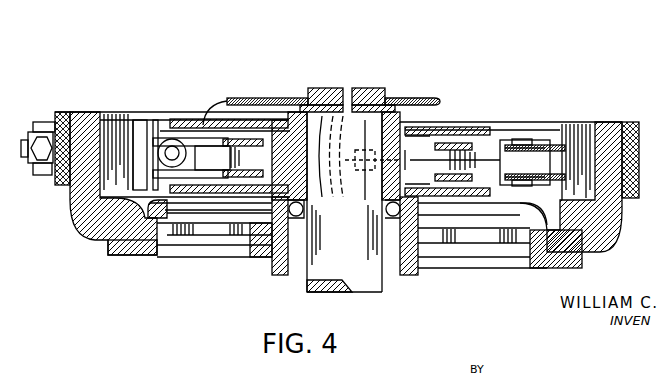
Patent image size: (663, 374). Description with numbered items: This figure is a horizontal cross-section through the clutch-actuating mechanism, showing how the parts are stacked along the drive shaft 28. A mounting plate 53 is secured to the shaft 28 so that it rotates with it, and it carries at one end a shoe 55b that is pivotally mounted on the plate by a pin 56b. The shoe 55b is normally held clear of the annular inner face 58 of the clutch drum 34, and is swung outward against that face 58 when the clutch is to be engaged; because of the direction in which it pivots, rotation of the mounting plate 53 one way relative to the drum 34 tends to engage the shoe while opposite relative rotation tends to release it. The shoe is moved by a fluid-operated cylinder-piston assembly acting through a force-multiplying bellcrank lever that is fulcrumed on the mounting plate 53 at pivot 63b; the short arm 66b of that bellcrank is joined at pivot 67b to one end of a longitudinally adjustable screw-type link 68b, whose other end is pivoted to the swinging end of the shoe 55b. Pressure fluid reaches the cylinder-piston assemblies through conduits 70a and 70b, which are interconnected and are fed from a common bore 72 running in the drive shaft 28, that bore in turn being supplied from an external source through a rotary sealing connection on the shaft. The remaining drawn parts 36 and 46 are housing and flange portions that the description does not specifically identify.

The drive shaft 28 is at (354, 280).
The clutch drum 34 is at (85, 128).
The end plate 36 is at (68, 120).
The mounting flange 46 is at (133, 255).
The mounting plate 53 is at (192, 122).
The shoe 55b is at (497, 135).
The pin 56b is at (518, 145).
The annular inner face 58 is at (122, 126).
The pivot 63b is at (232, 130).
The short arm 66b is at (202, 120).
The pivot 67b is at (157, 120).
The screw-type link 68b is at (168, 148).
The conduit 70a is at (227, 102).
The conduit 70b is at (400, 107).
The bore 72 is at (347, 103).